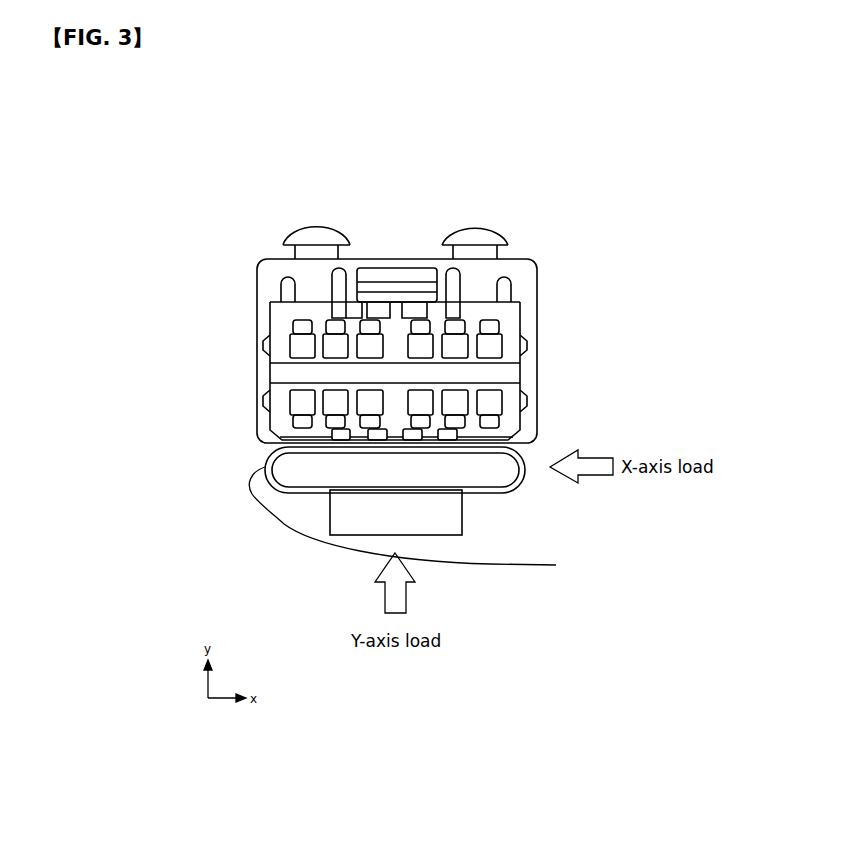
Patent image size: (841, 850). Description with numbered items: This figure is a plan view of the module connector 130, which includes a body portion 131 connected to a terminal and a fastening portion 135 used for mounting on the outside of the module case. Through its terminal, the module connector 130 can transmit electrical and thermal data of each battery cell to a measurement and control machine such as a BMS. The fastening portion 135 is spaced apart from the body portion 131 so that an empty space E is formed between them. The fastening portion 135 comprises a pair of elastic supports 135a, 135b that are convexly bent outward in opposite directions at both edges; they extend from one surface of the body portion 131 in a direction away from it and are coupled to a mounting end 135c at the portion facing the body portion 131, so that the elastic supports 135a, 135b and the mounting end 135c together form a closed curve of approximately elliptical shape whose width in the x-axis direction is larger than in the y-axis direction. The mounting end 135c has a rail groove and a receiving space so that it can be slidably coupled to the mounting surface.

The module connector 130 is at (420, 180).
The body portion 131 is at (537, 372).
The fastening portion 135 is at (584, 530).
The elastic support 135a is at (470, 558).
The elastic support 135b is at (531, 470).
The mounting end 135c is at (447, 520).
The empty space E is at (315, 473).